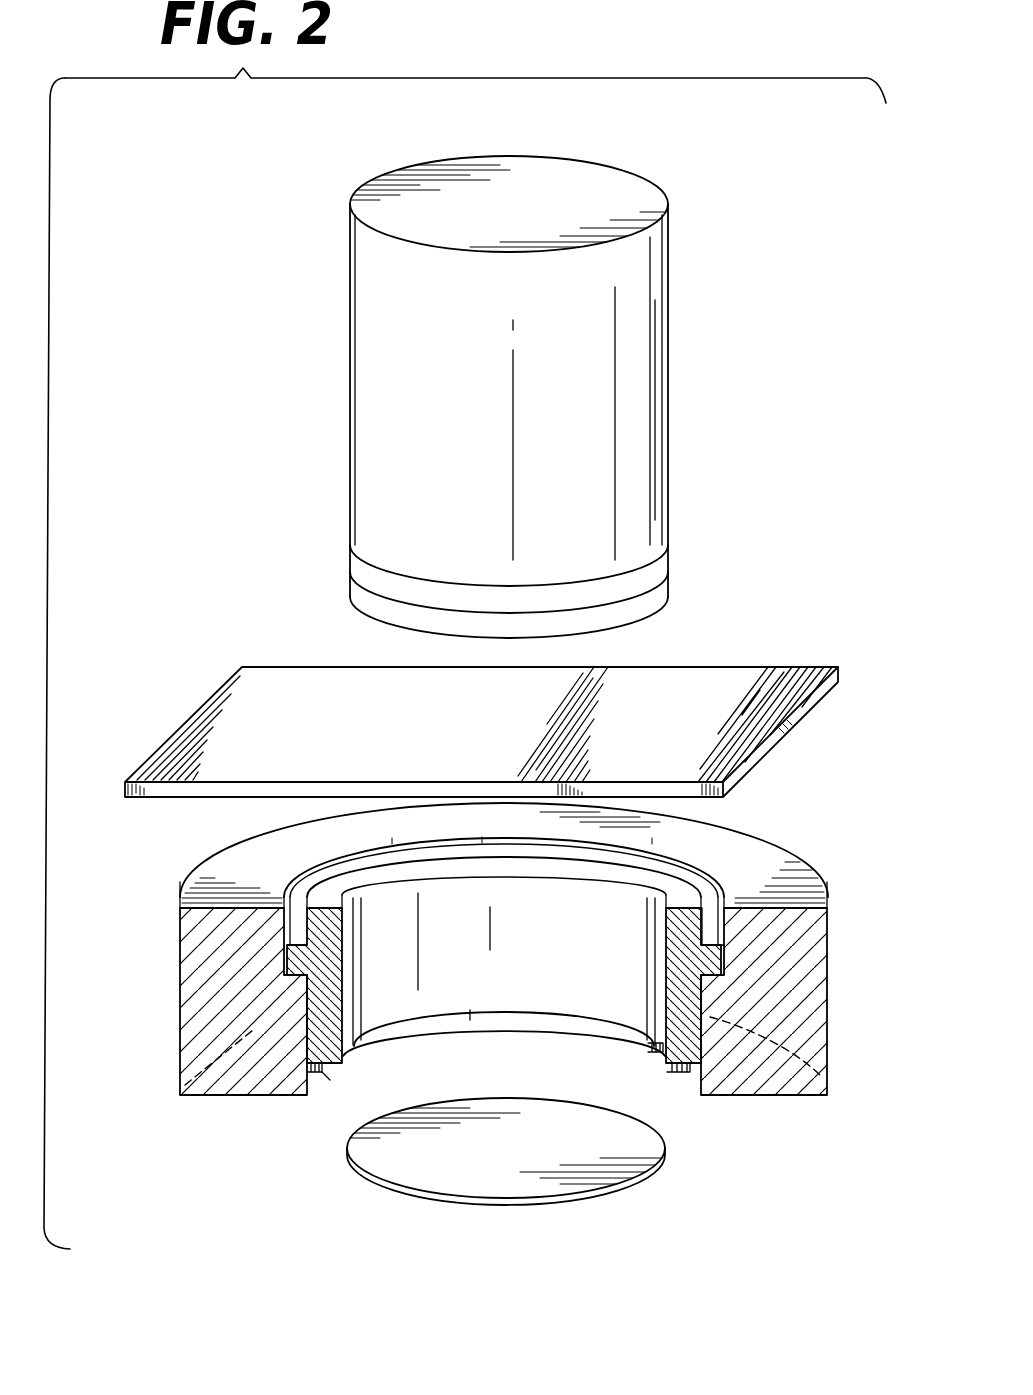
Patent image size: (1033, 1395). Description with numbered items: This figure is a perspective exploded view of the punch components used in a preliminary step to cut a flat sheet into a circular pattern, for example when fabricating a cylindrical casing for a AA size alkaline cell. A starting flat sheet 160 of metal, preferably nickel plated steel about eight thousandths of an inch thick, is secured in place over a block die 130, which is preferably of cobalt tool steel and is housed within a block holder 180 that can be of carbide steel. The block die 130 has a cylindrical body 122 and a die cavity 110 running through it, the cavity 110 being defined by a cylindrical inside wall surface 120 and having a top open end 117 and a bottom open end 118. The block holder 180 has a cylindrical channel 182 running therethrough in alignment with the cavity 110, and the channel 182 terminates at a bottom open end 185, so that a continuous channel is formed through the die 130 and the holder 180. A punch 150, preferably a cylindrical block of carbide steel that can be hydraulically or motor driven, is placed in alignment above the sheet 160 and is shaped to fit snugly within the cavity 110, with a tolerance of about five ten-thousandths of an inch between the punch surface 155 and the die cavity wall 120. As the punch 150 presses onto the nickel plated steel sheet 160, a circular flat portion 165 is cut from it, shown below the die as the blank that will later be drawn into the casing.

The punch 150 is at (668, 352).
The punch surface 155 is at (655, 423).
The flat sheet 160 is at (262, 667).
The block holder 180 is at (192, 886).
The top open end 117 is at (392, 881).
The cylindrical body 122 is at (712, 918).
The block die 130 is at (305, 1015).
The inside wall surface 120 is at (390, 1007).
The die cavity 110 is at (343, 1060).
The bottom open end 185 is at (357, 1058).
The bottom open end 118 is at (633, 1040).
The cylindrical channel 182 is at (680, 1073).
The circular flat portion 165 is at (613, 1193).